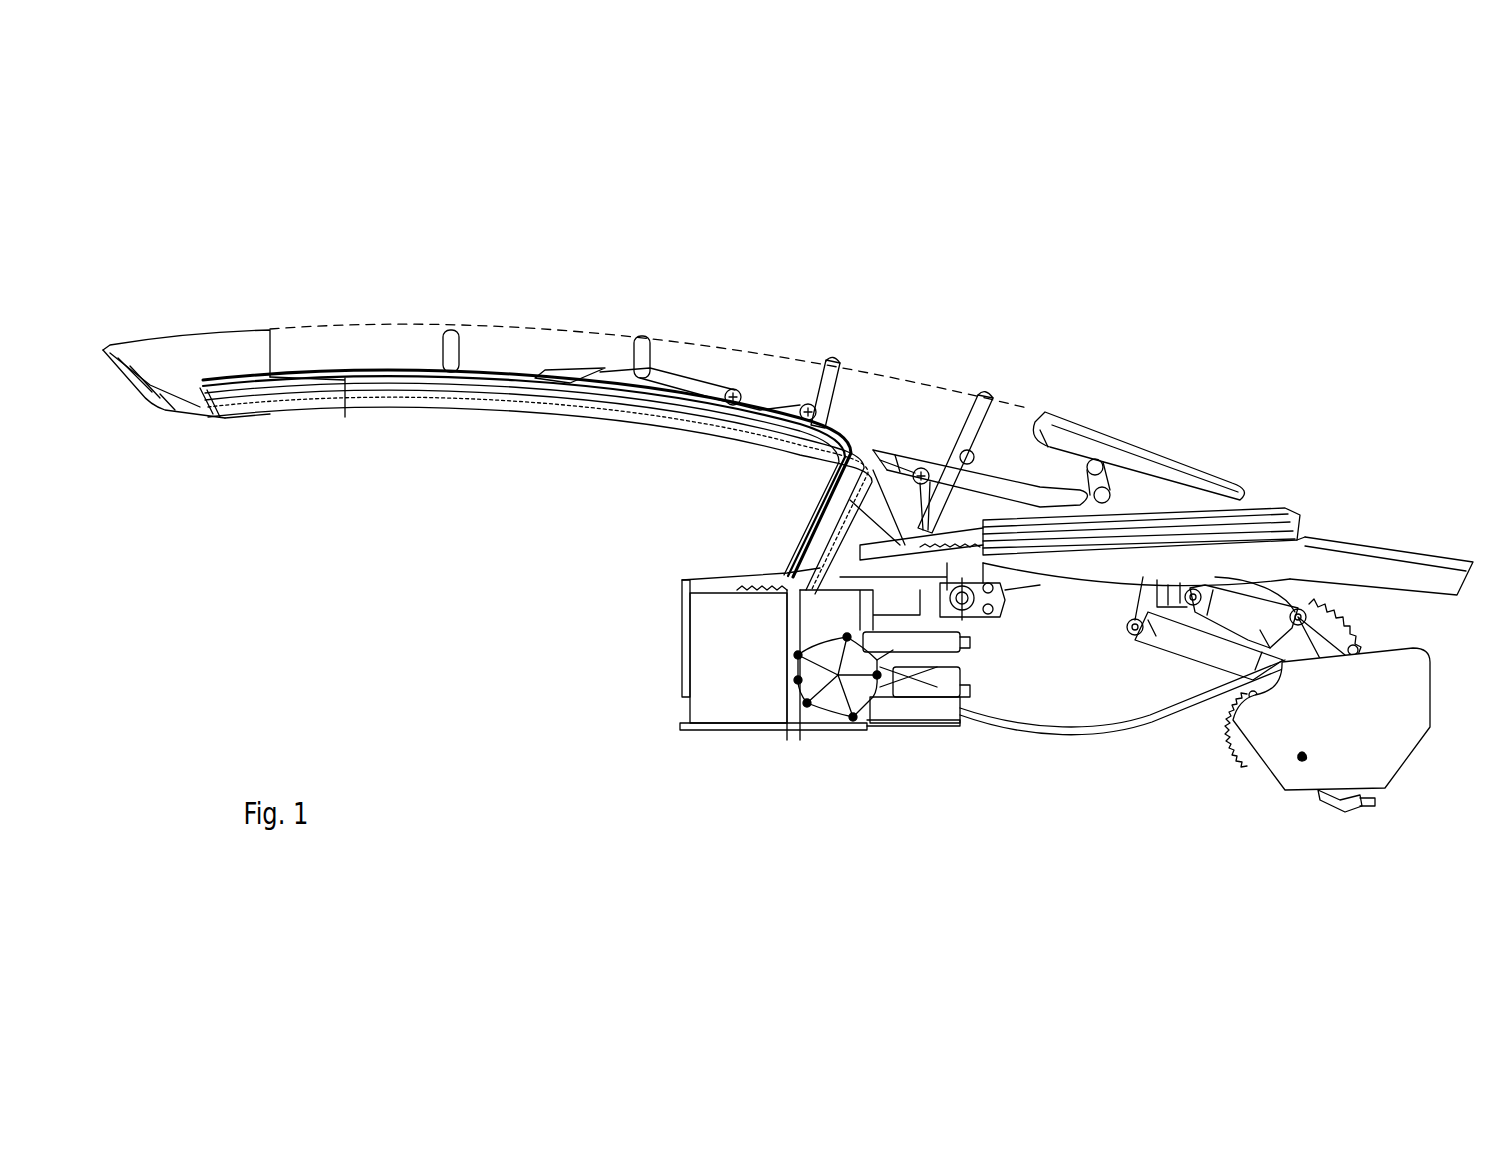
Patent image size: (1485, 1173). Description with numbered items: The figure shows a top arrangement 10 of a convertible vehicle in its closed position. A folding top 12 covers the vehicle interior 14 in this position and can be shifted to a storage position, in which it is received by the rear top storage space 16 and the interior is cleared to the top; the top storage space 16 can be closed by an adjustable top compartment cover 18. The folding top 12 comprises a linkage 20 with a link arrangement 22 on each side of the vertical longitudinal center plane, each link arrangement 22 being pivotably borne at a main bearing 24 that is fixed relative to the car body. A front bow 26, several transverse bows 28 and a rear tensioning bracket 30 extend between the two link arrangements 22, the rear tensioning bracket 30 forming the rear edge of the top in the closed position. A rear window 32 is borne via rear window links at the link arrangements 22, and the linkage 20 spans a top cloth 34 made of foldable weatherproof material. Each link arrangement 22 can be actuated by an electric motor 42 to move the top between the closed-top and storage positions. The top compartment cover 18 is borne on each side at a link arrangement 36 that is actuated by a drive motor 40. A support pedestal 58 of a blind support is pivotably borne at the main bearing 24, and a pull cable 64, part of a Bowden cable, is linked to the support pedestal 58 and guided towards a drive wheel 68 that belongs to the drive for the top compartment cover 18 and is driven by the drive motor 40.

The top arrangement 10 is at (1008, 272).
The folding top 12 is at (218, 320).
The vehicle interior 14 is at (410, 539).
The top storage space 16 is at (1106, 702).
The top compartment cover 18 is at (1357, 566).
The linkage 20 is at (331, 423).
The link arrangement 22 is at (629, 445).
The main bearing 24 is at (718, 710).
The front bow 26 is at (185, 358).
The transverse bows 28 is at (452, 328).
The rear tensioning bracket 30 is at (1280, 510).
The rear window 32 is at (1133, 452).
The top cloth 34 is at (355, 322).
The link arrangement 36 is at (1196, 672).
The drive motor 40 is at (1340, 803).
The electric motor 42 is at (870, 712).
The support pedestal 58 is at (1395, 765).
The pull cable 64 is at (1055, 725).
The drive wheel 68 is at (1332, 627).